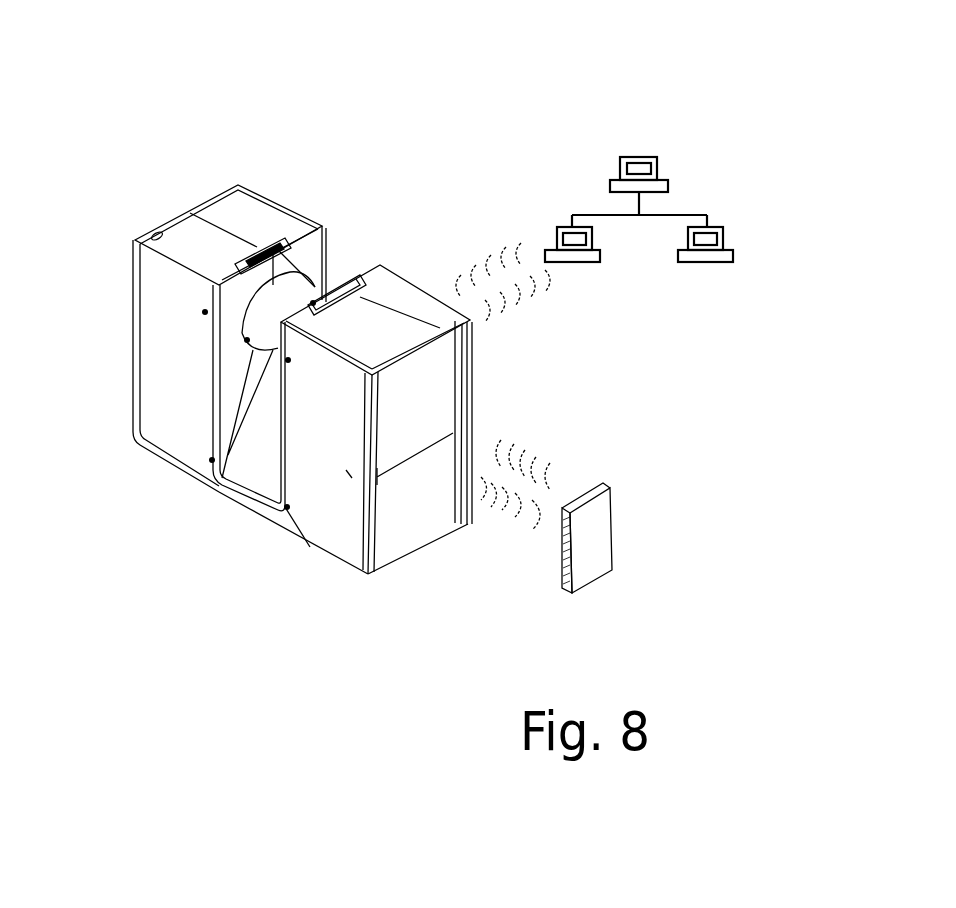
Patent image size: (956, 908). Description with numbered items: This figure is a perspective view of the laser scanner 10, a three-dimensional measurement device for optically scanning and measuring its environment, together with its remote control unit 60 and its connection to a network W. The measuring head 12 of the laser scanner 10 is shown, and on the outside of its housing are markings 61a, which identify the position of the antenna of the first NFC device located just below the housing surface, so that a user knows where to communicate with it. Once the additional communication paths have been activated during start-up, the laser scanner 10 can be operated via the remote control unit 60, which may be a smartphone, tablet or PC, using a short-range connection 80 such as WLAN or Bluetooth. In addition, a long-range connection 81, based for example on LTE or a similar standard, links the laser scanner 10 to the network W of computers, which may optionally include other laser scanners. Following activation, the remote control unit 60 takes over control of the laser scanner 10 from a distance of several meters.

The laser scanner 10 is at (367, 194).
The measuring head 12 is at (173, 215).
The markings 61a is at (350, 473).
The remote control unit 60 is at (611, 529).
The short-range connection 80 is at (543, 460).
The long-range connection 81 is at (527, 298).
The network W is at (696, 186).